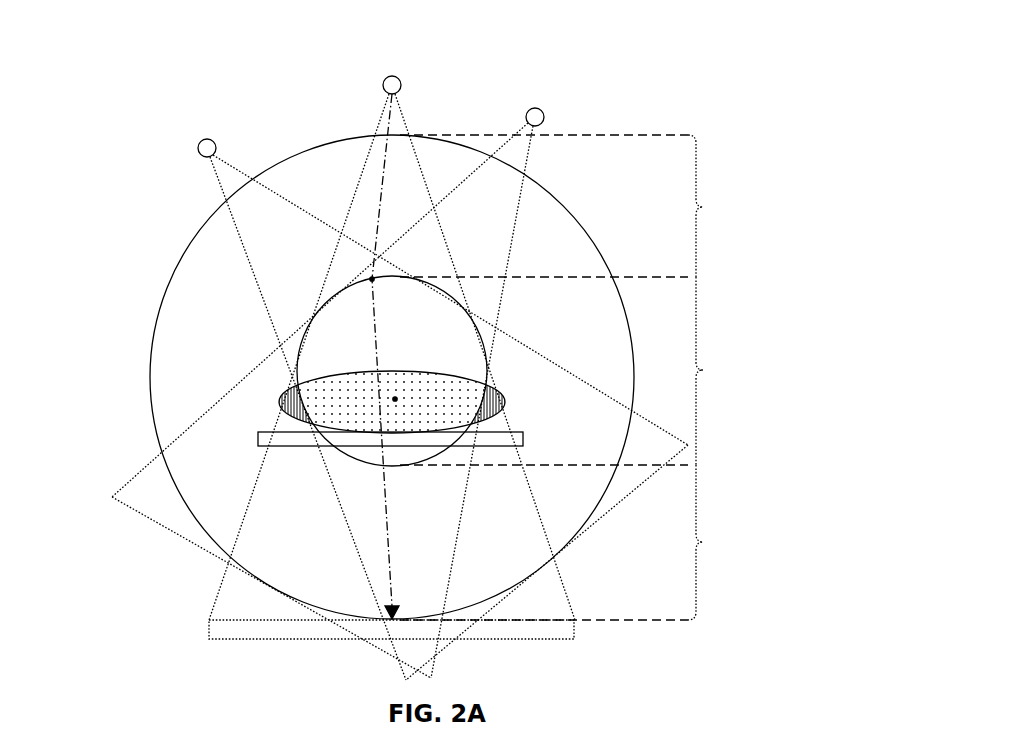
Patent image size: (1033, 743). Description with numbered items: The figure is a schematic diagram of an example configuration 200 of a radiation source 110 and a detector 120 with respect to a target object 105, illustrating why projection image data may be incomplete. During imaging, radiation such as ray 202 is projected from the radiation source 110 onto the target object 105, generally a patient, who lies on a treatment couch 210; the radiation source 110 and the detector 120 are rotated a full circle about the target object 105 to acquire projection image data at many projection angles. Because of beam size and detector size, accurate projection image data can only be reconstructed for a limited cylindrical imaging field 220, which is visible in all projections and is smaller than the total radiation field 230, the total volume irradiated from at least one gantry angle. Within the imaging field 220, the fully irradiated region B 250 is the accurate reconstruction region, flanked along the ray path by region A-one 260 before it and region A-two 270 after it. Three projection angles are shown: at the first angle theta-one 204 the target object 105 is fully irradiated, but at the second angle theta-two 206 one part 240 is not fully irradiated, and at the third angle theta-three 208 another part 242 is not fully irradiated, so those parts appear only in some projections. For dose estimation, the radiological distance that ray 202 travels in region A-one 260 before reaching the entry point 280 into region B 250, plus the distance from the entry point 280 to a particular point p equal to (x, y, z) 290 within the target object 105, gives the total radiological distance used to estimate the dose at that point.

The example configuration 200 is at (79, 38).
The radiation source 110 is at (399, 79).
The detector 120 is at (209, 630).
The target object 105 is at (392, 402).
The ray 202 is at (381, 172).
The first angle θ1 204 is at (380, 110).
The second angle θ2 206 is at (210, 168).
The third angle θ3 208 is at (530, 155).
The treatment couch 210 is at (258, 440).
The imaging field 220 is at (392, 371).
The total radiation field 230 is at (150, 322).
The part of target object not fully irradiated at second angle 240 is at (280, 401).
The part of target object not fully irradiated at third angle 242 is at (503, 401).
The first region B 250 is at (618, 371).
The second region A1 260 is at (602, 206).
The region A2 270 is at (603, 542).
The entry point 280 is at (374, 281).
The point p=(x, y, z) 290 is at (396, 399).